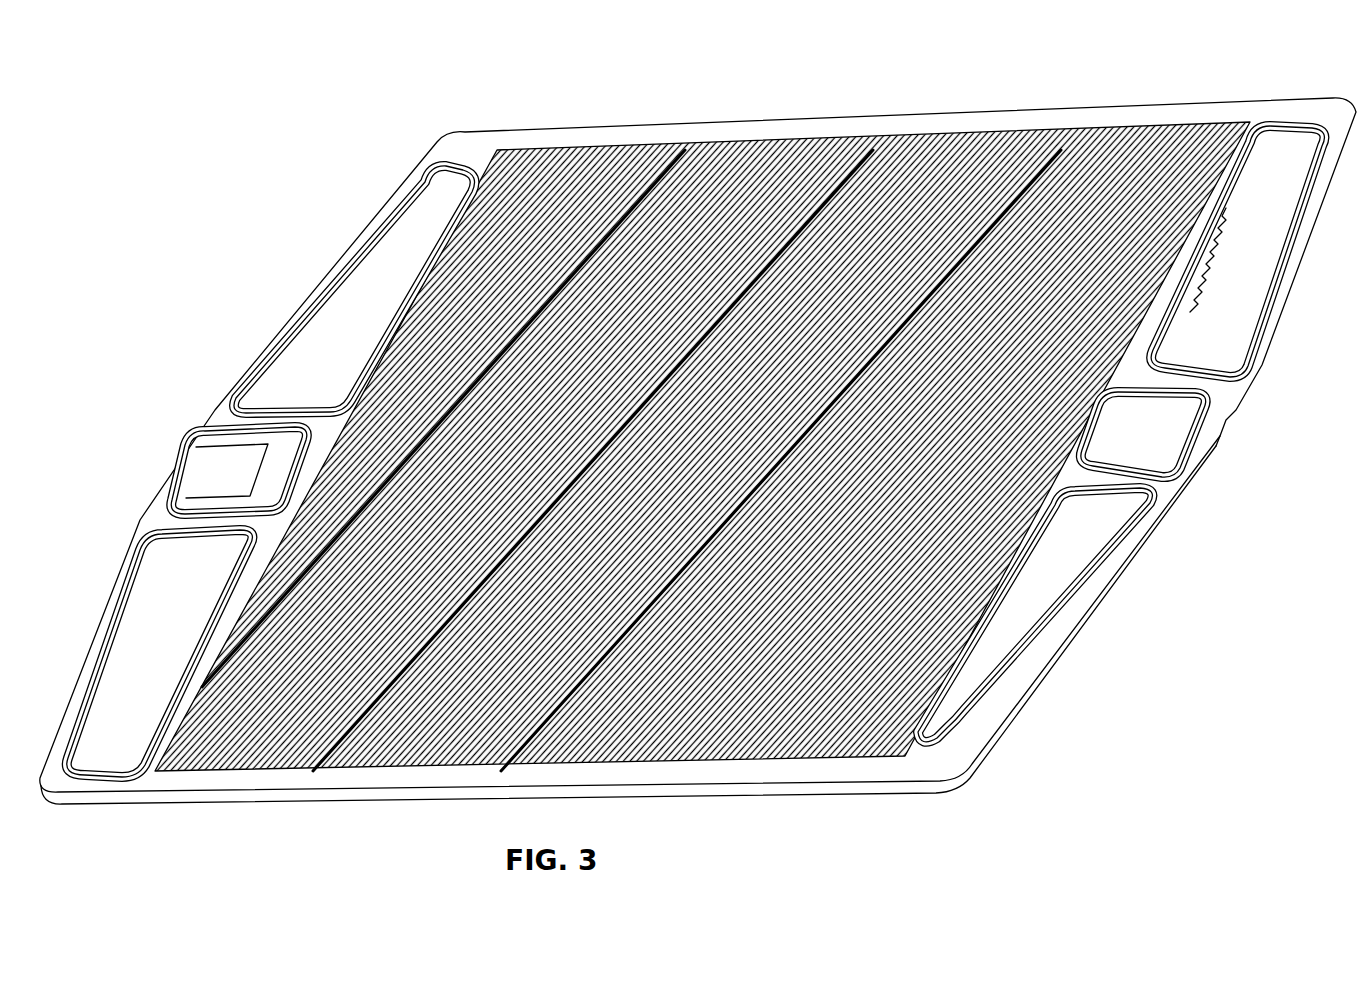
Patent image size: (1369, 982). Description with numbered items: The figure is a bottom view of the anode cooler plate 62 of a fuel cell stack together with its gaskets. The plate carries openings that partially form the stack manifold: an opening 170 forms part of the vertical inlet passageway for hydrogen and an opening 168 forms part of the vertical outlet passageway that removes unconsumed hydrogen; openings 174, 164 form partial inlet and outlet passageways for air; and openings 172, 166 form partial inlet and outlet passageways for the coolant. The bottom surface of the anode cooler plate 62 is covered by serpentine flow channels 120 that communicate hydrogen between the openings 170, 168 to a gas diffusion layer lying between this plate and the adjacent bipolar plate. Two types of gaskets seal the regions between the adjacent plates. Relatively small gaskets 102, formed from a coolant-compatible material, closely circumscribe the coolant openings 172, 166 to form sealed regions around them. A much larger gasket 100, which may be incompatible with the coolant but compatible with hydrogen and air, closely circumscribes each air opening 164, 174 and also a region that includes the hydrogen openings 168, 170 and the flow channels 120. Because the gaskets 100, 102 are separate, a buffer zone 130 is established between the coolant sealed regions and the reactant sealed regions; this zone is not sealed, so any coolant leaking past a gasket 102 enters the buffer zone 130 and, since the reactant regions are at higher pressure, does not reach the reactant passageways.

The anode cooler plate 62 is at (702, 472).
The gasket 100 is at (437, 155).
The gasket 102 is at (180, 481).
The serpentine flow channels 120 is at (650, 172).
The buffer zone 130 is at (215, 412).
The opening 164 is at (1235, 315).
The opening 166 is at (1150, 455).
The opening 168 is at (1010, 640).
The opening 170 is at (340, 325).
The opening 172 is at (240, 488).
The opening 174 is at (115, 708).